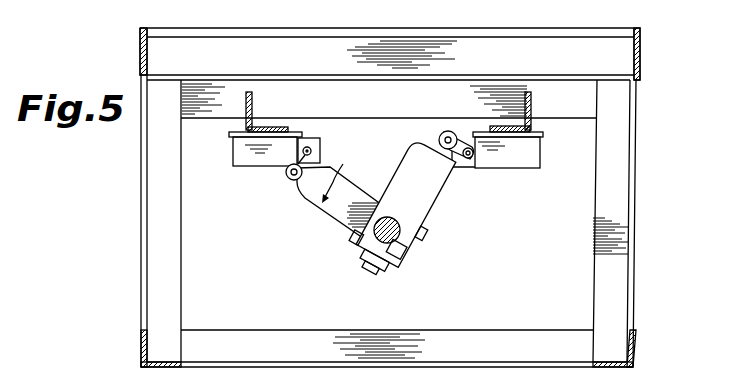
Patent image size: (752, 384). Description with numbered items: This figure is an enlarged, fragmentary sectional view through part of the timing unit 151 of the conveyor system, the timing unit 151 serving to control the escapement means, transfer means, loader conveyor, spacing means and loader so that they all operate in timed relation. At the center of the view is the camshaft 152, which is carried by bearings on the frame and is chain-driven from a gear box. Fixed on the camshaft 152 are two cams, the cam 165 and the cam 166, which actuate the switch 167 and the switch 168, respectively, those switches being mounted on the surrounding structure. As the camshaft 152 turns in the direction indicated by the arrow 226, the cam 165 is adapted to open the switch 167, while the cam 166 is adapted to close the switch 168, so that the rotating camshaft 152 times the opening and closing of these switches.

The timing unit 151 is at (654, 207).
The camshaft 152 is at (402, 233).
The cam 165 is at (427, 202).
The cam 166 is at (338, 224).
The switch 167 is at (527, 168).
The switch 168 is at (243, 166).
The arrow 226 is at (345, 175).